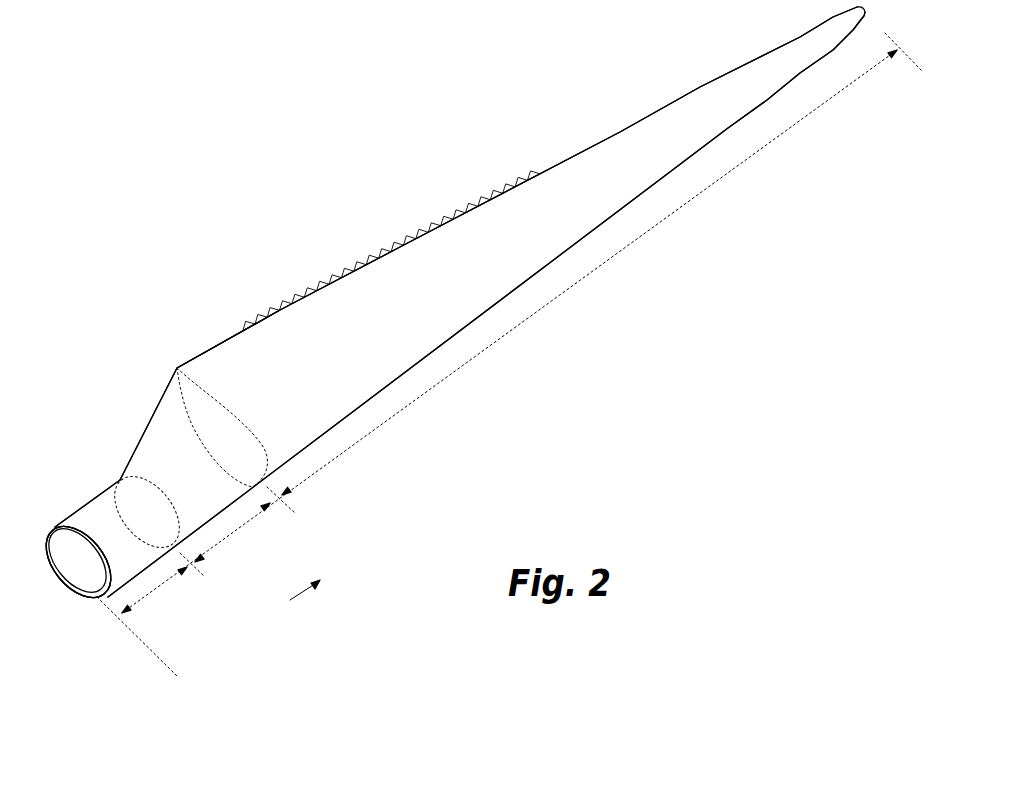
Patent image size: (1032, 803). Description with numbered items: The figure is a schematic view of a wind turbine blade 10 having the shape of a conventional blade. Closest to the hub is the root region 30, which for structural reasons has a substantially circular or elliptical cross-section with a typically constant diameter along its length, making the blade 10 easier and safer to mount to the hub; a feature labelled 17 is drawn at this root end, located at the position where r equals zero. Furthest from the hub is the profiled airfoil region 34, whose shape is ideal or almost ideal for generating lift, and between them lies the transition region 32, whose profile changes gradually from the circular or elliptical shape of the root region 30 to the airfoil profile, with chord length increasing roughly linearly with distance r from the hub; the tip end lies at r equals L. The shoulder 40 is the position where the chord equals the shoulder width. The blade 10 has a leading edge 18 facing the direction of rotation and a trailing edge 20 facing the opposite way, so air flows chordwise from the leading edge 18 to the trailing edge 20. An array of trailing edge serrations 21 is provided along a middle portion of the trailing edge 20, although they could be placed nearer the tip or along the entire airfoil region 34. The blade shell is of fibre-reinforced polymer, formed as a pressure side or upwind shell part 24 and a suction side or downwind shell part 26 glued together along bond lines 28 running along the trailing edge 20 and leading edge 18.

The wind turbine blade 10 is at (314, 196).
The root end 17 is at (67, 550).
The leading edge 18 is at (617, 214).
The trailing edge 20 is at (503, 182).
The trailing edge serrations 21 is at (268, 305).
The pressure side or upwind shell part 24 is at (73, 522).
The suction side or downwind shell part 26 is at (90, 598).
The bond lines 28 is at (57, 527).
The root region 30 is at (160, 588).
The transition region 32 is at (240, 530).
The airfoil region 34 is at (525, 320).
The shoulder 40 is at (177, 368).